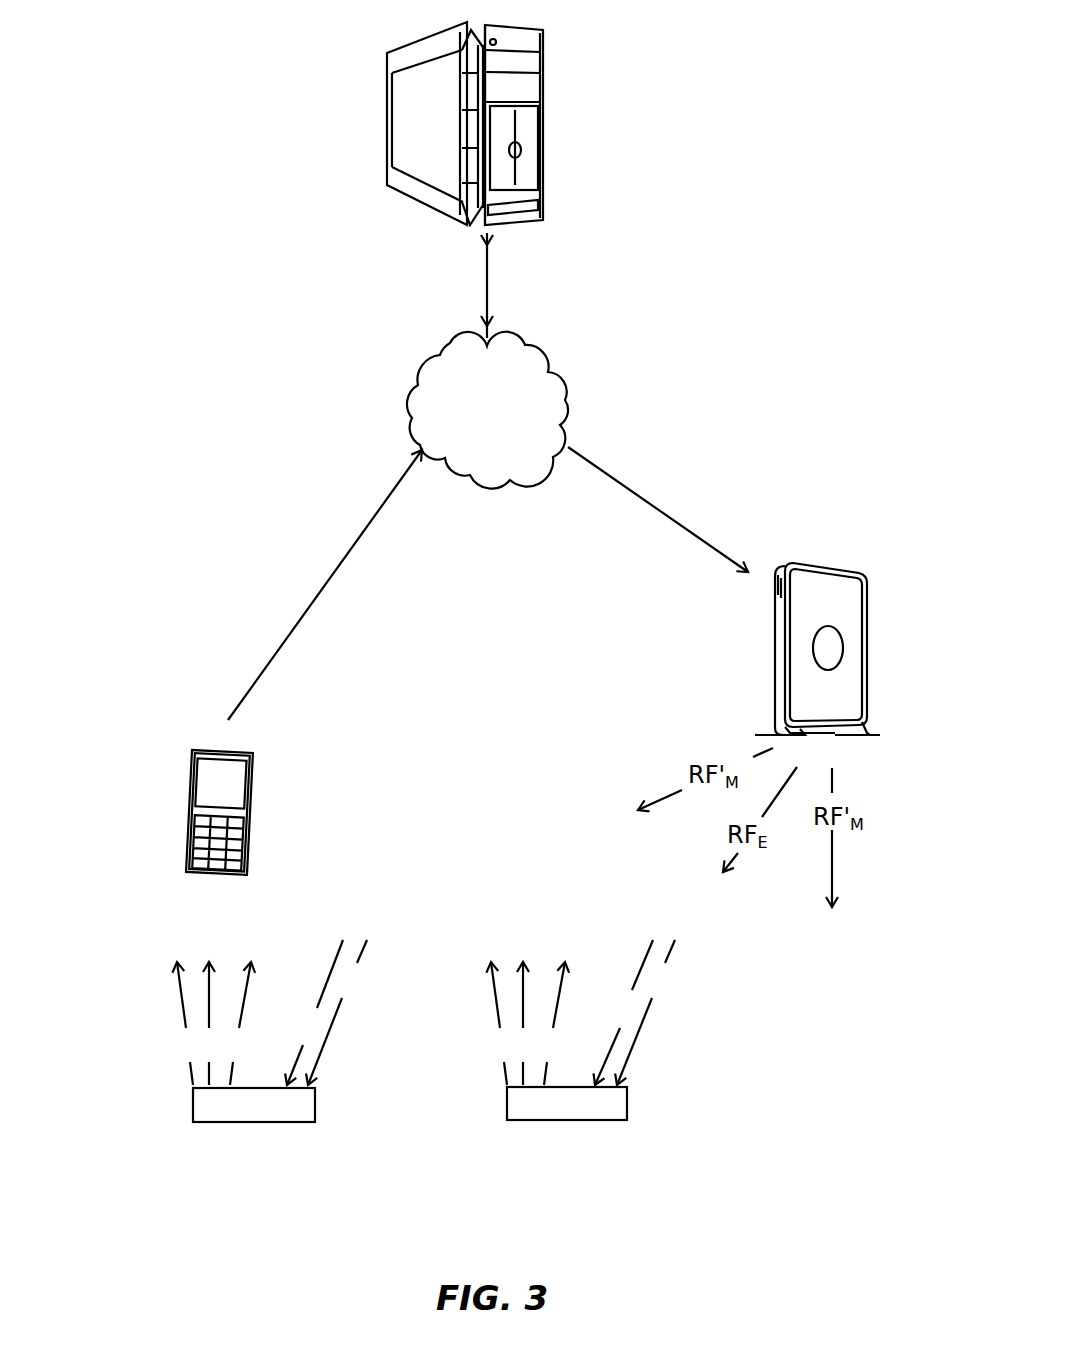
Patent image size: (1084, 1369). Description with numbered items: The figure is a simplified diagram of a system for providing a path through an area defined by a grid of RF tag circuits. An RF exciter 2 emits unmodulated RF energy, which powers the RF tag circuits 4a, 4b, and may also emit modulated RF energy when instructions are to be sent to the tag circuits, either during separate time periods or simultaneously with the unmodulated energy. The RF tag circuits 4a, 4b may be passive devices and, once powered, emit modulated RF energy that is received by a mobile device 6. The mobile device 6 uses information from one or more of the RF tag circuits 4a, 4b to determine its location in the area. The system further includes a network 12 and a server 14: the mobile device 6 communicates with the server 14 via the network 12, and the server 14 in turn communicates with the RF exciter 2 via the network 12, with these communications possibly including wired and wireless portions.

The server 14 is at (543, 102).
The network 12 is at (567, 380).
The RF exciter 2 is at (823, 563).
The mobile device 6 is at (190, 765).
The RF tag circuit 4a is at (193, 1122).
The RF tag circuit 4b is at (507, 1120).